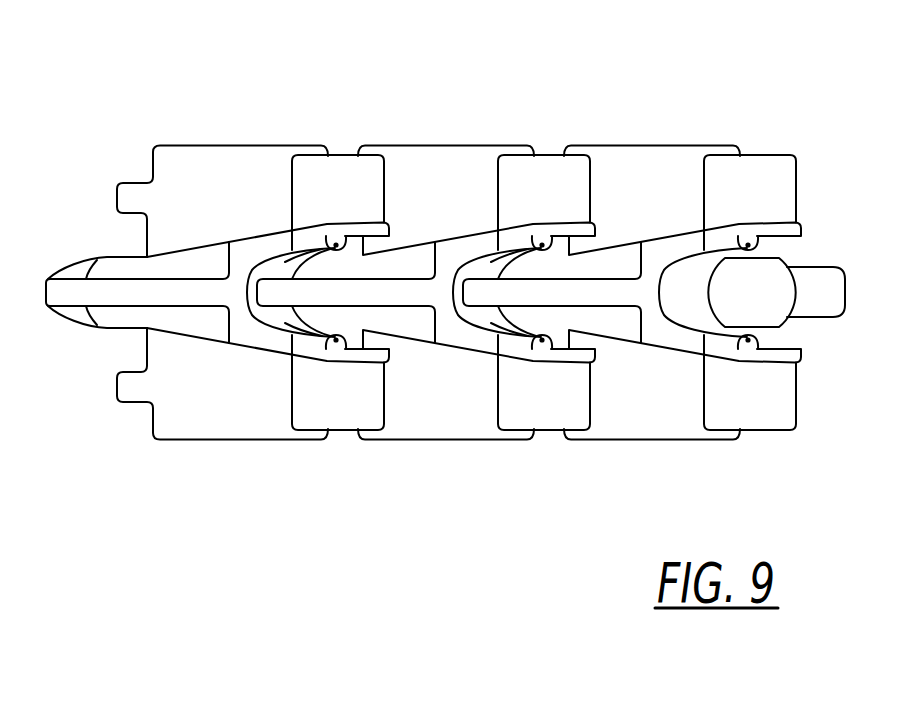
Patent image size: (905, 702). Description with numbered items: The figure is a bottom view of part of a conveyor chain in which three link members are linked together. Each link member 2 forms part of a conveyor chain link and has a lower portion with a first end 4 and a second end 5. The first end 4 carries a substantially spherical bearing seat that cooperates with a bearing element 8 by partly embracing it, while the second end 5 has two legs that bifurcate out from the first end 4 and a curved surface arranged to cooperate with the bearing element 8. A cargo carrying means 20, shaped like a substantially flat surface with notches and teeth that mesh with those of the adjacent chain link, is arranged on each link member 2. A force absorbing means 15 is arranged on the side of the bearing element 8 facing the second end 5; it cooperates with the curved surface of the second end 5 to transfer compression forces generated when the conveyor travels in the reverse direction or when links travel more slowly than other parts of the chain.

The link member 2 is at (632, 112).
The first end 4 is at (402, 262).
The cargo carrying means 20 is at (463, 160).
The second end 5 is at (773, 227).
The bearing element 8 is at (763, 295).
The force absorbing means 15 is at (827, 267).